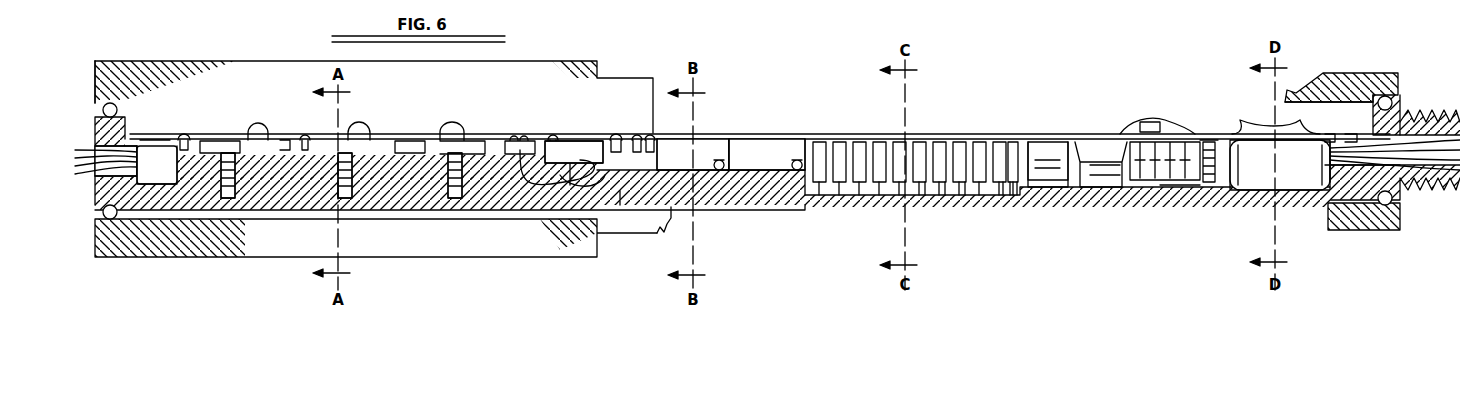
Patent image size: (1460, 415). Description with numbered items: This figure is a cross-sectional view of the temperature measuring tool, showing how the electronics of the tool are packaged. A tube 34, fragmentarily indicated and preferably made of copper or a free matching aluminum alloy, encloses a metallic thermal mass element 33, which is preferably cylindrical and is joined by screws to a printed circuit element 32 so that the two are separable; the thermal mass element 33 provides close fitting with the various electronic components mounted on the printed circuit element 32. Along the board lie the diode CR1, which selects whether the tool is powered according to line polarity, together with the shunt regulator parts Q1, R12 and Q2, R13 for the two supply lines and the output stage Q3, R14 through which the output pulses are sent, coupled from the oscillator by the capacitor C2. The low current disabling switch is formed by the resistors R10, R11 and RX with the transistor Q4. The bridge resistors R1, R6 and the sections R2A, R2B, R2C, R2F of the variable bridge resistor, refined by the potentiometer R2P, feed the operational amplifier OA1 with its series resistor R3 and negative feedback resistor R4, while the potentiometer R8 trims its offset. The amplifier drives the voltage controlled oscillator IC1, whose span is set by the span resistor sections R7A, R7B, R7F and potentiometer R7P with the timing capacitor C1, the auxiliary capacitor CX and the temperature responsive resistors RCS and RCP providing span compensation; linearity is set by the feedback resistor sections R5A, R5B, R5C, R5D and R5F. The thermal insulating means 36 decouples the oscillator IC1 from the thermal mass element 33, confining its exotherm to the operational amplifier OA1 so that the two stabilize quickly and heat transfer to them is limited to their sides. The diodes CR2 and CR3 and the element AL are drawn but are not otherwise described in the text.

The tube 34 is at (152, 70).
The metallic thermal mass element 33 is at (400, 208).
The printed circuit element 32 is at (258, 140).
The thermal insulating means 36 is at (1166, 187).
The diode CR1 is at (177, 140).
The diode CR2 is at (1178, 134).
The diode CR3 is at (1152, 122).
The resistor R13 is at (188, 140).
The resistor R12 is at (310, 140).
The resistor R14 is at (415, 140).
The resistor R11 is at (554, 140).
The resistor R10 is at (616, 140).
The resistor RX is at (530, 140).
The power transistor Q1 is at (365, 140).
The power transistor Q2 is at (270, 140).
The output transistor Q3 is at (482, 140).
The transistor Q4 is at (590, 141).
The timing capacitor C1 is at (1262, 167).
The capacitor C2 is at (573, 180).
The auxiliary capacitor CX is at (1345, 232).
The aluminum member AL is at (636, 195).
The potentiometer R7P is at (705, 145).
The potentiometer R2P is at (757, 145).
The temperature responsive resistor RCP is at (828, 140).
The temperature responsive resistor RCS is at (815, 140).
The resistor R7F is at (845, 140).
The resistor R7A is at (865, 140).
The resistor R7B is at (895, 140).
The resistor R5A is at (905, 140).
The resistor R5B is at (940, 140).
The resistor R5C is at (955, 140).
The resistor R5D is at (968, 140).
The resistor R2B is at (990, 140).
The resistor R2C is at (1000, 140).
The resistor R6 is at (925, 195).
The resistor R5F is at (948, 195).
The resistor R2A is at (960, 195).
The negative feedback resistor R4 is at (1008, 195).
The series resistor R3 is at (1014, 195).
The resistor R2F is at (1020, 195).
The potentiometer R8 is at (1058, 150).
The resistor R1 is at (1098, 155).
The operational amplifier OA1 is at (1095, 150).
The voltage controlled oscillator IC1 is at (1125, 180).